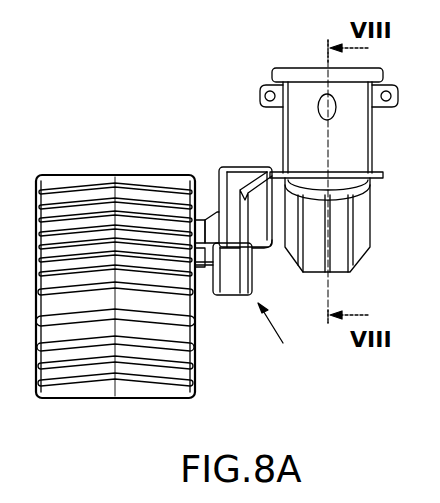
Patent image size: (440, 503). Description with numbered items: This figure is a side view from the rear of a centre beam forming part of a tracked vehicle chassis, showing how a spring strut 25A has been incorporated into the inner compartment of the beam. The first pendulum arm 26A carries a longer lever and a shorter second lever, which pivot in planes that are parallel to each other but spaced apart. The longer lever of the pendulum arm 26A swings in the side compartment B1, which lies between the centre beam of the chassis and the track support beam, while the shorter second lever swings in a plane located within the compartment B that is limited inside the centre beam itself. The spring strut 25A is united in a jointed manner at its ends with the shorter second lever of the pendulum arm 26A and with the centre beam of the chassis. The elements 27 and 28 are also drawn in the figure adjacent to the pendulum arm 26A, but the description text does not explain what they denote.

The spring strut 25A is at (298, 181).
The first pendulum arm 26A is at (232, 167).
The pivot joint 27 is at (255, 246).
The connecting block 28 is at (210, 290).
The compartment B is at (358, 149).
The side compartment B1 is at (284, 336).